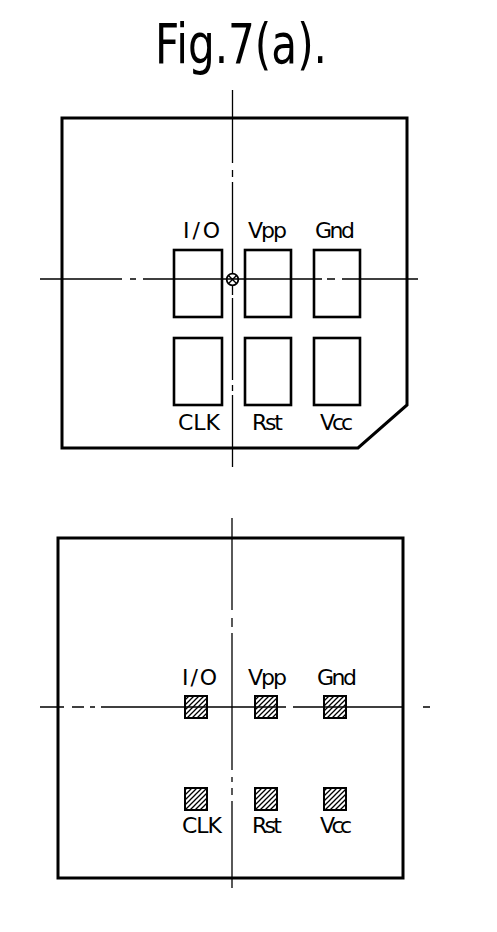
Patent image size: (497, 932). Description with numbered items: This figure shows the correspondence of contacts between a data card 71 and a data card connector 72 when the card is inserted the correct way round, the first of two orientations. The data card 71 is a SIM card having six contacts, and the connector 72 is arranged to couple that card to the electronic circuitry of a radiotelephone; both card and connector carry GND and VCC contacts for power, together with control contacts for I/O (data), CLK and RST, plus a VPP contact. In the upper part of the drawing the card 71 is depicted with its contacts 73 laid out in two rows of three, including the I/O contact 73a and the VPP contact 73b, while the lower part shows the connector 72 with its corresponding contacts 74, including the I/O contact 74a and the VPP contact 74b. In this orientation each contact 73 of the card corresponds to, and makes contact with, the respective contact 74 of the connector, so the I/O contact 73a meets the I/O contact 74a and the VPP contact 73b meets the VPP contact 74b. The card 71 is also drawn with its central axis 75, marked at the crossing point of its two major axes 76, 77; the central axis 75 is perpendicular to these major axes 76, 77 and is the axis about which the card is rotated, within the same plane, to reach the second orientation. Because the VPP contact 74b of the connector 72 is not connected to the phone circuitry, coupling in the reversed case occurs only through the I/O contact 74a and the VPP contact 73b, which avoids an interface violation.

The data card 71 is at (407, 221).
The data card connector 72 is at (403, 620).
The contacts of the data card 73 is at (352, 295).
The I/O contact of the SIM card 73a is at (185, 268).
The VPP contact of the SIM card 73b is at (280, 265).
The contacts of the connector 74 is at (337, 788).
The I/O contact of the connector 74a is at (185, 702).
The VPP contact of the connector 74b is at (278, 698).
The central axis 75 is at (232, 272).
The major axis of the card 76 is at (233, 133).
The major axis of the card 77 is at (78, 280).